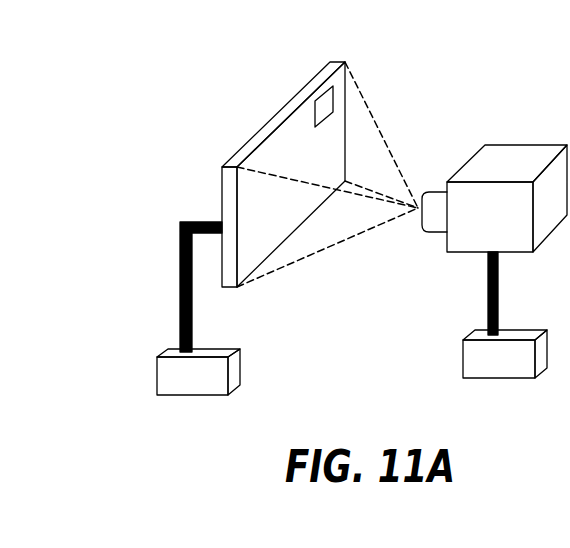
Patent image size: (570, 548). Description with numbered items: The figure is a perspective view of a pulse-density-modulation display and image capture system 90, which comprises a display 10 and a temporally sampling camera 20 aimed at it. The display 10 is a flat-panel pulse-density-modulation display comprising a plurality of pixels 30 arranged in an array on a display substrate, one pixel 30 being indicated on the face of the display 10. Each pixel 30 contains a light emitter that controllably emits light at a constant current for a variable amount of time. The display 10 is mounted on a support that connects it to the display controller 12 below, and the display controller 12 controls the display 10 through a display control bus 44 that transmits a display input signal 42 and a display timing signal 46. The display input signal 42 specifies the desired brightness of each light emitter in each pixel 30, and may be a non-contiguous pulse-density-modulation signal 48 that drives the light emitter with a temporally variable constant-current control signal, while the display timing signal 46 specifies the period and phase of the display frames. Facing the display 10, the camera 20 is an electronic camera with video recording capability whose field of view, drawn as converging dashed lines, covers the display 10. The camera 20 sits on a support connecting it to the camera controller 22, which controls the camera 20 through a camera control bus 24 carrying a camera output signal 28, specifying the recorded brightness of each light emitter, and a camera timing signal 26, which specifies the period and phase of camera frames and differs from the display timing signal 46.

The pulse-density-modulation display and image capture system 90 is at (184, 108).
The display 10 is at (335, 61).
The pixel 30 is at (316, 92).
The display controller 12 is at (202, 397).
The display input signal 42 is at (122, 287).
The display control bus 44 is at (122, 287).
The display timing signal 46 is at (122, 287).
The non-contiguous pulse-density-modulation signal 48 is at (180, 256).
The temporally sampling camera 20 is at (527, 144).
The camera controller 22 is at (510, 379).
The camera control bus 24 is at (435, 293).
The camera timing signal 26 is at (435, 293).
The camera output signal 28 is at (488, 285).